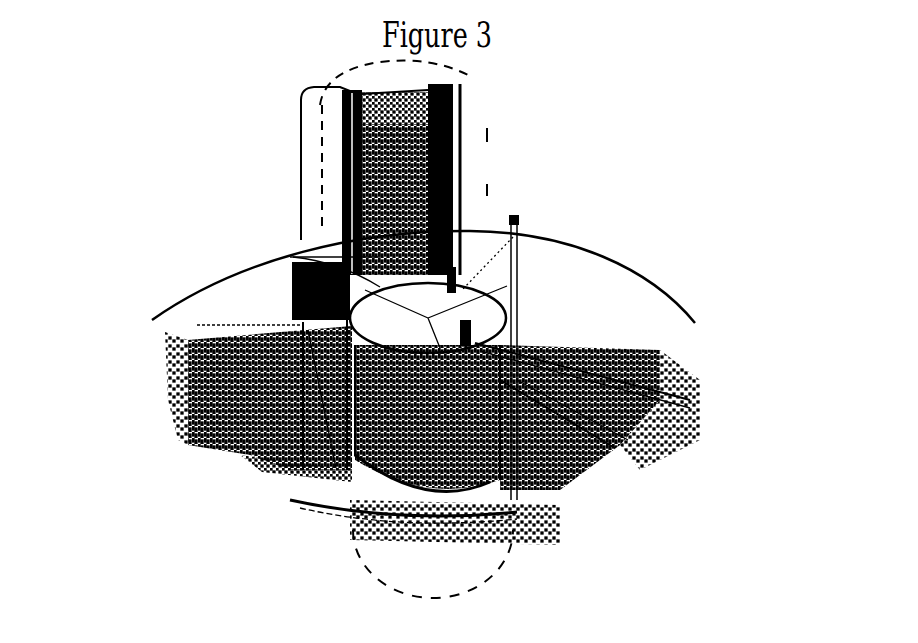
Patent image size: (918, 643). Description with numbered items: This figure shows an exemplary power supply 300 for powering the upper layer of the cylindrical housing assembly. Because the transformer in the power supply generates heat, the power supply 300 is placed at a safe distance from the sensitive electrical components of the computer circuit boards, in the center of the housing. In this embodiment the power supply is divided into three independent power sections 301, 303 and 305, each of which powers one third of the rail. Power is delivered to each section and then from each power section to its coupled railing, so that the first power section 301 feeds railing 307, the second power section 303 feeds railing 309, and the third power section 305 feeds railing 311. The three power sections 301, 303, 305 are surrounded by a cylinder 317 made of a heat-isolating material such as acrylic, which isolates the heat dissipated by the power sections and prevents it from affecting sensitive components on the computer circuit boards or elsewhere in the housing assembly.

The power supply 300 is at (473, 77).
The power section 301 is at (332, 98).
The power section 303 is at (600, 262).
The power section 305 is at (323, 453).
The railing 307 is at (297, 258).
The railing 309 is at (513, 313).
The railing 311 is at (350, 465).
The cylinder 317 is at (520, 514).